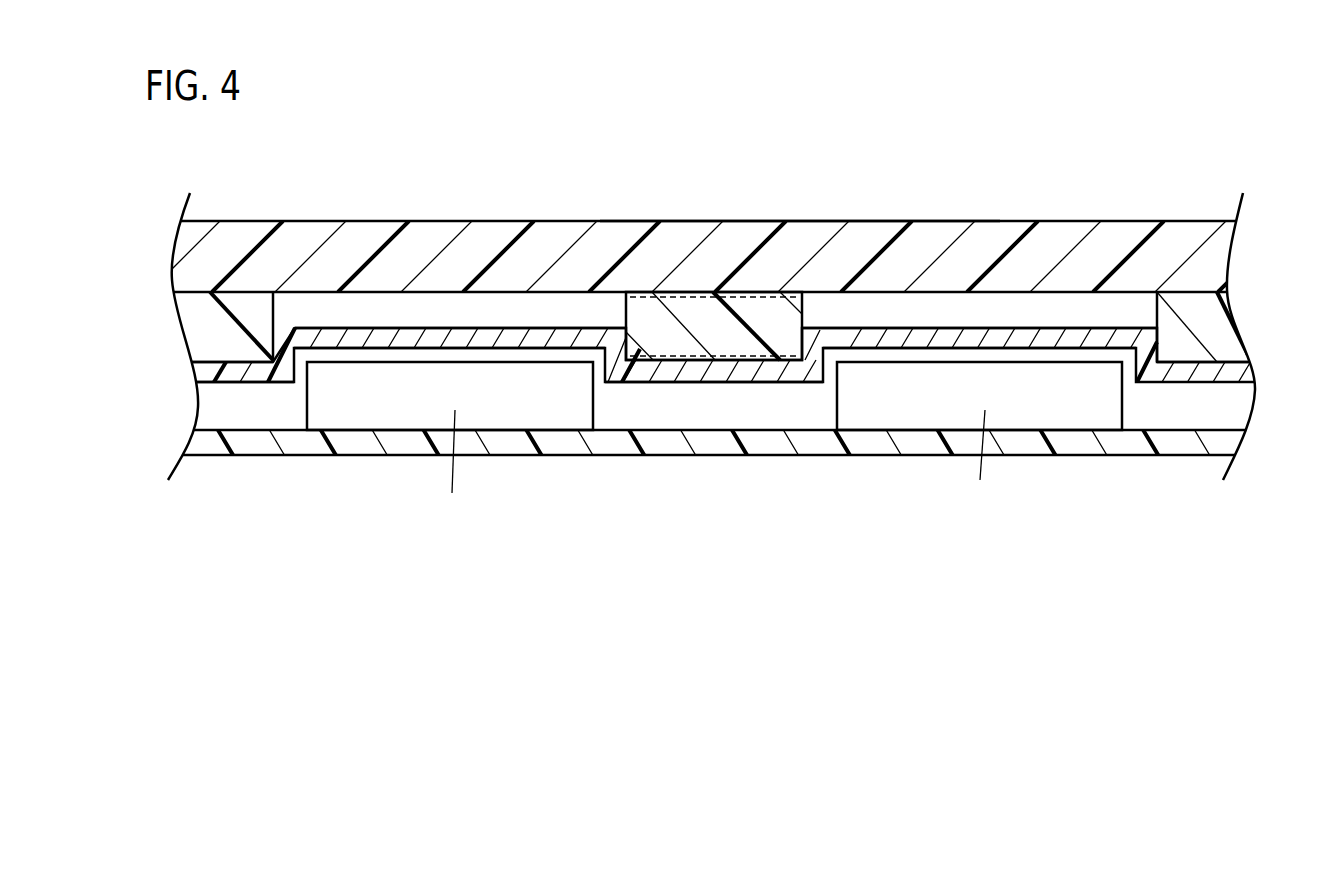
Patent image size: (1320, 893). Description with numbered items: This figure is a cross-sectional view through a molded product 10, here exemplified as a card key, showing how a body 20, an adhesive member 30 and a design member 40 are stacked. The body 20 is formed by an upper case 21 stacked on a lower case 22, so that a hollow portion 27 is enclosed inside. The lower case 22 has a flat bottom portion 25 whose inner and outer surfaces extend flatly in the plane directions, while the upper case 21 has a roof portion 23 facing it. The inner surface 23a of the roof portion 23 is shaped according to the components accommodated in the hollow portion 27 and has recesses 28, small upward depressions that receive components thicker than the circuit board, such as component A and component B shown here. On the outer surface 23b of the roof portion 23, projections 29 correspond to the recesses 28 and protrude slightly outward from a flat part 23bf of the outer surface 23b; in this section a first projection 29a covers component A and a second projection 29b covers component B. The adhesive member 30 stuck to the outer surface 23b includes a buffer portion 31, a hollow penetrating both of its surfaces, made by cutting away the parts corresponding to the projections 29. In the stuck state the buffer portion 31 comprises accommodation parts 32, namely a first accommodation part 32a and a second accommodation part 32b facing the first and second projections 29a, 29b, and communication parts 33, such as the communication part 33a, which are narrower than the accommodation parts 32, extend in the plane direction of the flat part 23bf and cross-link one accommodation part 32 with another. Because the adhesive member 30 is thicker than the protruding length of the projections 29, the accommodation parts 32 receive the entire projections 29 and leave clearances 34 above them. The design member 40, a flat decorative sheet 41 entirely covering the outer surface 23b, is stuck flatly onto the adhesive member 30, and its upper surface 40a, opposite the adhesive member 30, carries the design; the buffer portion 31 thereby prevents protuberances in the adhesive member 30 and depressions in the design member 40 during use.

The molded product 10 is at (541, 121).
The body 20 is at (362, 467).
The upper case 21 is at (668, 373).
The lower case 22 is at (513, 456).
The roof portion 23 is at (208, 368).
The inner surface 23a is at (223, 381).
The outer surface 23b is at (233, 360).
The flat part 23bf is at (1193, 358).
The bottom portion 25 is at (208, 438).
The hollow portion 27 is at (722, 415).
The recesses 28 is at (503, 349).
The projections 29 is at (726, 241).
The first projection 29a is at (420, 328).
The second projection 29b is at (897, 328).
The adhesive member 30 is at (160, 311).
The buffer portion 31 is at (373, 291).
The accommodation parts 32 is at (729, 258).
The first accommodation part 32a is at (273, 308).
The second accommodation part 32b is at (1157, 308).
The communication parts 33 is at (714, 257).
The intermediate spacer 33a is at (696, 313).
The clearances 34 is at (491, 316).
The design member 40 is at (619, 213).
The upper surface 40a is at (805, 221).
The decorative sheet 41 is at (572, 232).